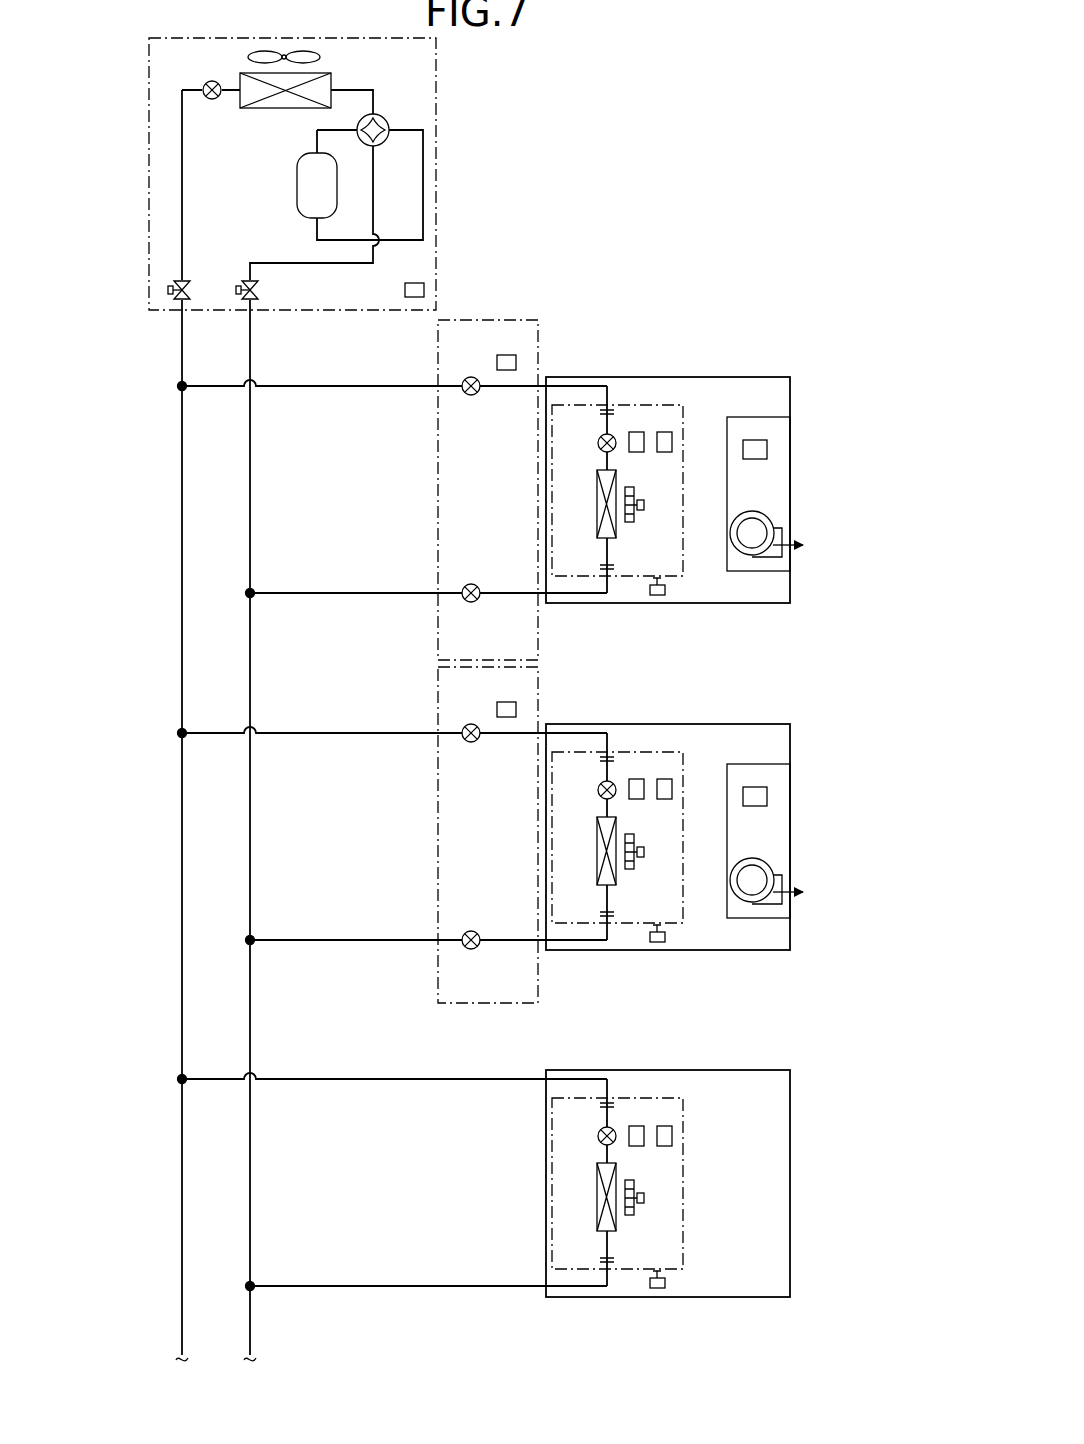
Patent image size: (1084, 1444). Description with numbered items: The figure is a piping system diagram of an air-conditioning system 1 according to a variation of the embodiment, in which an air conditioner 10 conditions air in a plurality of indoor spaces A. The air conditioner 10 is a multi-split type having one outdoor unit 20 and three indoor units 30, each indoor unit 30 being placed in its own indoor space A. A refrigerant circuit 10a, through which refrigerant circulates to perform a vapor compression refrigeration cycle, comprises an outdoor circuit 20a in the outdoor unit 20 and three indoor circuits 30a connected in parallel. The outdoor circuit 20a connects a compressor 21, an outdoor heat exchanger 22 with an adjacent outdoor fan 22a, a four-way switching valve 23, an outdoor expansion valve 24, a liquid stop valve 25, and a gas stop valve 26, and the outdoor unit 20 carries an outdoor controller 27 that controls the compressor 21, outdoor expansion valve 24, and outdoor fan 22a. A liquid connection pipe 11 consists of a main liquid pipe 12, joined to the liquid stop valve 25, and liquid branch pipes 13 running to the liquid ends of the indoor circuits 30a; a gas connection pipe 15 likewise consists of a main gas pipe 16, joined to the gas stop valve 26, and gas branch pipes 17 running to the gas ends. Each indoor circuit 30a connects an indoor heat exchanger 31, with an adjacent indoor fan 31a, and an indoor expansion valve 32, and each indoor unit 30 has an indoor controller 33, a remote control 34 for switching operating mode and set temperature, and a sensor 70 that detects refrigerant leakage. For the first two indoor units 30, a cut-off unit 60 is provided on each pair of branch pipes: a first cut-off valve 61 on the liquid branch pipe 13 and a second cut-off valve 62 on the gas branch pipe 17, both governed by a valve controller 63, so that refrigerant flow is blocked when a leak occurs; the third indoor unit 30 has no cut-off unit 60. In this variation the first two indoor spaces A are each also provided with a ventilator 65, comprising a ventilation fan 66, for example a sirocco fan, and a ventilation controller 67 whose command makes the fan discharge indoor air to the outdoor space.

The air-conditioning system 1 is at (664, 146).
The air conditioner 10 is at (558, 243).
The refrigerant circuit 10a is at (172, 430).
The liquid connection pipe 11 is at (172, 364).
The main liquid pipe 12 is at (184, 343).
The liquid branch pipe 13 is at (350, 385).
The gas connection pipe 15 is at (244, 436).
The main gas pipe 16 is at (252, 343).
The gas branch pipe 17 is at (345, 595).
The outdoor unit 20 is at (437, 62).
The outdoor circuit 20a is at (237, 158).
The compressor 21 is at (297, 184).
The outdoor heat exchanger 22 is at (271, 108).
The outdoor fan 22a is at (248, 57).
The four-way switching valve 23 is at (380, 118).
The outdoor expansion valve 24 is at (212, 100).
The liquid stop valve 25 is at (185, 282).
The gas stop valve 26 is at (249, 282).
The outdoor controller 27 is at (420, 282).
The indoor unit 30 is at (613, 405).
The indoor circuit 30a is at (590, 529).
The indoor heat exchanger 31 is at (597, 500).
The indoor fan 31a is at (628, 523).
The indoor expansion valve 32 is at (598, 444).
The indoor controller 33 is at (636, 432).
The remote control 34 is at (665, 590).
The cut-off unit 60 is at (538, 330).
The first cut-off valve 61 is at (470, 396).
The second cut-off valve 62 is at (468, 583).
The valve controller 63 is at (503, 355).
The ventilator 65 is at (733, 417).
The ventilation fan 66 is at (755, 557).
The ventilation controller 67 is at (757, 440).
The sensor 70 is at (664, 453).
The indoor space A is at (790, 395).